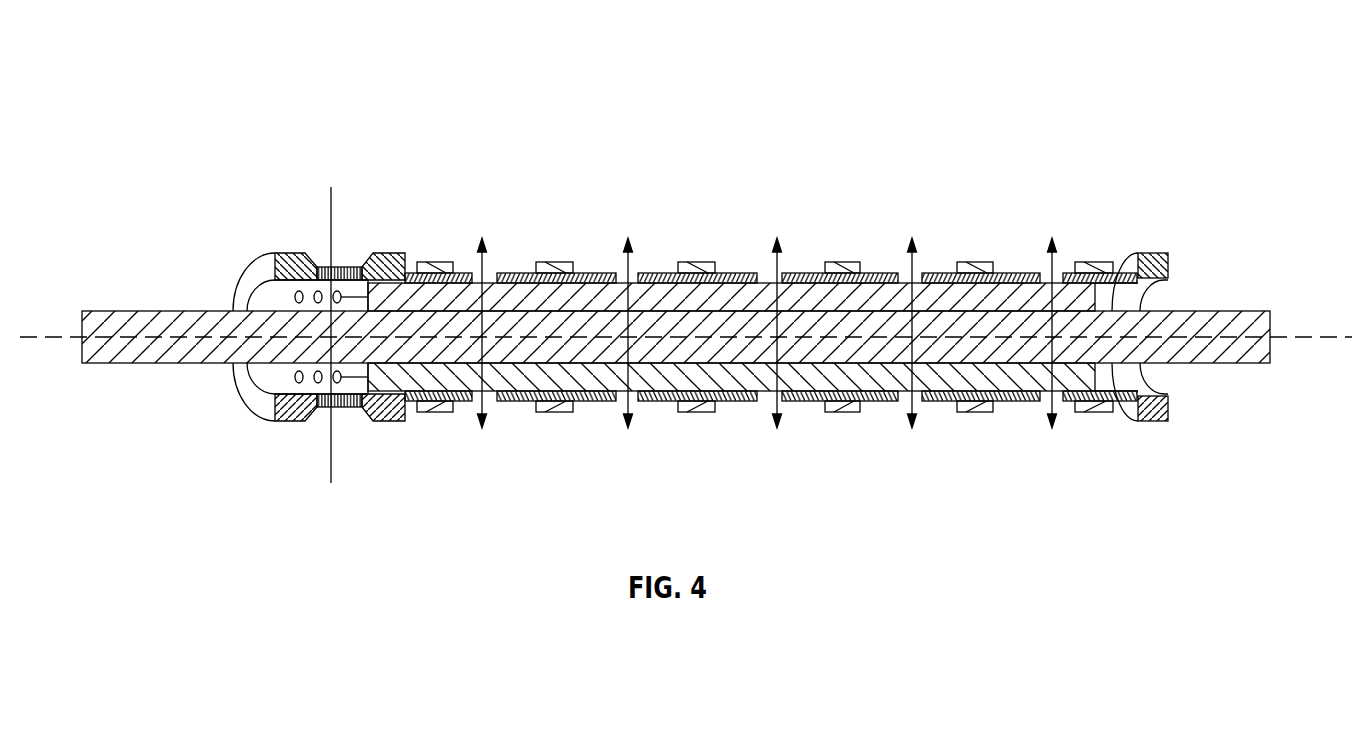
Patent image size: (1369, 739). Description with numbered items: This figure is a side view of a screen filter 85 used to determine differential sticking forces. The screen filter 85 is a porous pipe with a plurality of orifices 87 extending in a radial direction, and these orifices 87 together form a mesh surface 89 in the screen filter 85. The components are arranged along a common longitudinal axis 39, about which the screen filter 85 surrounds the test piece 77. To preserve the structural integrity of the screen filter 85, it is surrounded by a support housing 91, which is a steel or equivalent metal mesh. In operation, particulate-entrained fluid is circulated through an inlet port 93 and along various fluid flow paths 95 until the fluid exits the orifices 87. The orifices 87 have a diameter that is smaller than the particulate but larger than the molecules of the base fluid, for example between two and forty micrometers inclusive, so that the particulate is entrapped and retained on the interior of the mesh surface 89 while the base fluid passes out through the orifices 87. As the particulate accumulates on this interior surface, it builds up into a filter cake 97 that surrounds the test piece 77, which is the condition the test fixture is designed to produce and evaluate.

The screen filter 85 is at (223, 74).
The fluid flow paths 95 is at (331, 212).
The orifices 87 is at (493, 271).
The support housing 91 is at (694, 262).
The mesh surface 89 is at (934, 234).
The test piece 77 is at (1213, 311).
The longitudinal axis 39 is at (1337, 342).
The inlet port 93 is at (340, 407).
The filter cake 97 is at (1079, 393).